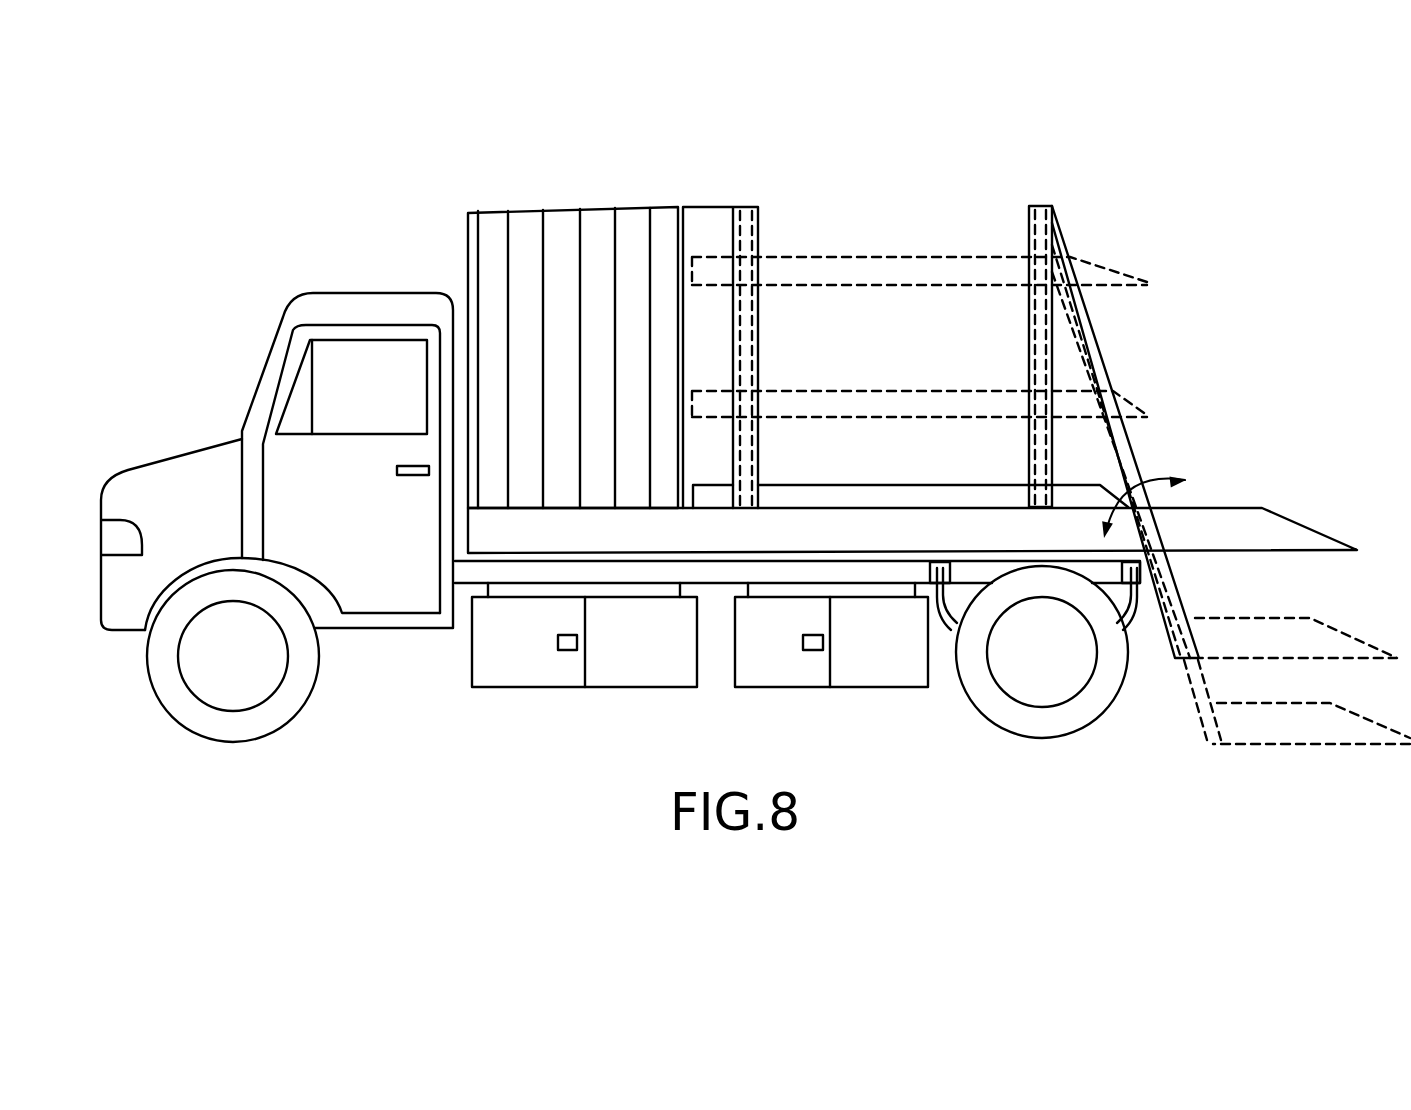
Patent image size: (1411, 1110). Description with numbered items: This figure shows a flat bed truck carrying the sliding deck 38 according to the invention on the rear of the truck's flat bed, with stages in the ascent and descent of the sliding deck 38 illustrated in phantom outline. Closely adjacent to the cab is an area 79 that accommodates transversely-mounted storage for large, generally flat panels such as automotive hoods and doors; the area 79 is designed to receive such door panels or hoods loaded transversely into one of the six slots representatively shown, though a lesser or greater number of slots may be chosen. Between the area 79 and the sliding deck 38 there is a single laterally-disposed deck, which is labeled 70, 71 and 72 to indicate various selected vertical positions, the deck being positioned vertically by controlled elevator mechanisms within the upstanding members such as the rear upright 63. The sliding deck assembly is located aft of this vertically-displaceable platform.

The sliding deck 38 is at (1313, 513).
The rear upright post 63 is at (1052, 213).
The laterally-disposed deck (selected vertical position) 70 is at (797, 268).
The laterally-disposed deck (selected vertical position) 71 is at (820, 410).
The laterally-disposed deck (selected vertical position) 72 is at (907, 500).
The area adjacent to the cab 79 is at (598, 190).